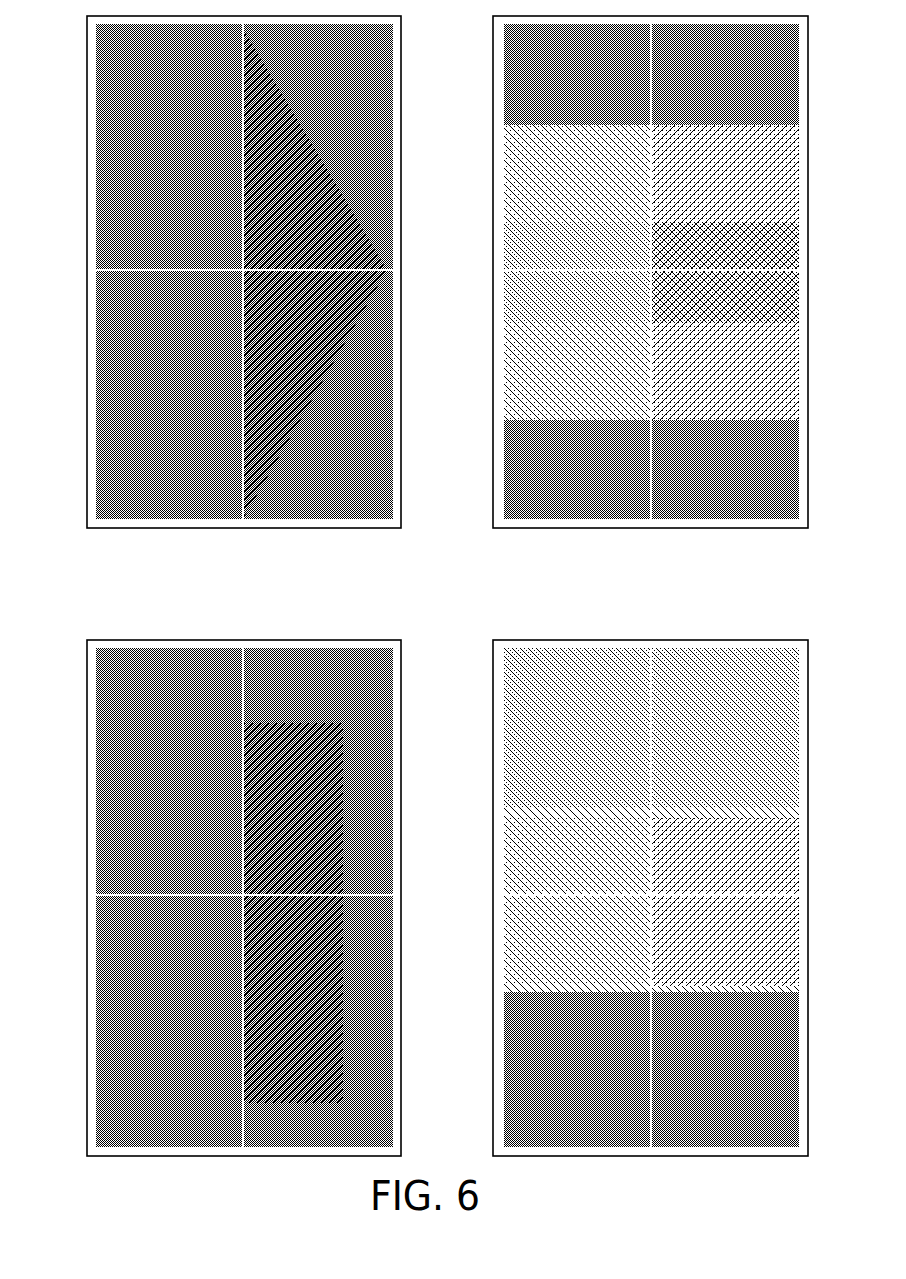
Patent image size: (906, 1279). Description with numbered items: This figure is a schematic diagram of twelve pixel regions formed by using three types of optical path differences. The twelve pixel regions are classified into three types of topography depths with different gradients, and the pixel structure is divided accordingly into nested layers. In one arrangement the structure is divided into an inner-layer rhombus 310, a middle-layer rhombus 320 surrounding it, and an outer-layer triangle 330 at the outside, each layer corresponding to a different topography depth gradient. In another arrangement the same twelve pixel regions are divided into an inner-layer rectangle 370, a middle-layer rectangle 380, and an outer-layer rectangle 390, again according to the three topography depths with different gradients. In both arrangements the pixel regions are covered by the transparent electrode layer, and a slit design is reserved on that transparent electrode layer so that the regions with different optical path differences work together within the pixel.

The inner-layer rhombus 310 is at (97, 276).
The middle-layer rhombus 320 is at (97, 190).
The outer-layer triangle 330 is at (90, 62).
The inner-layer rectangle 370 is at (97, 975).
The middle-layer rectangle 380 is at (97, 895).
The outer-layer rectangle 390 is at (97, 762).